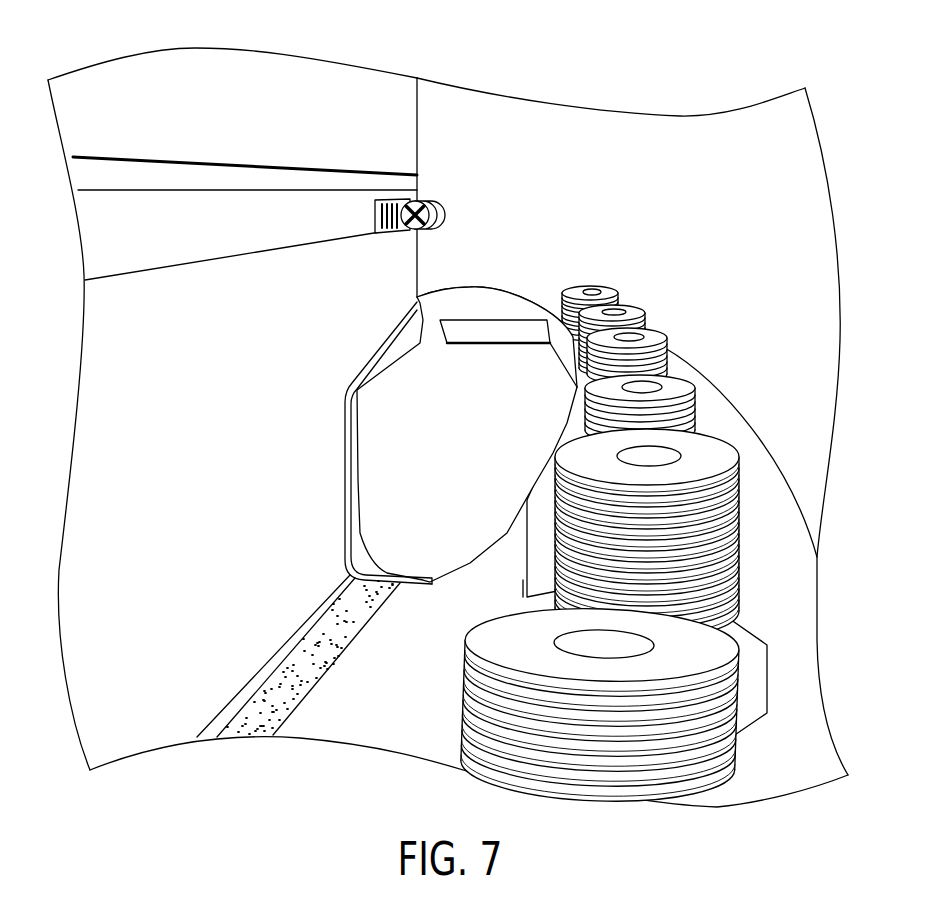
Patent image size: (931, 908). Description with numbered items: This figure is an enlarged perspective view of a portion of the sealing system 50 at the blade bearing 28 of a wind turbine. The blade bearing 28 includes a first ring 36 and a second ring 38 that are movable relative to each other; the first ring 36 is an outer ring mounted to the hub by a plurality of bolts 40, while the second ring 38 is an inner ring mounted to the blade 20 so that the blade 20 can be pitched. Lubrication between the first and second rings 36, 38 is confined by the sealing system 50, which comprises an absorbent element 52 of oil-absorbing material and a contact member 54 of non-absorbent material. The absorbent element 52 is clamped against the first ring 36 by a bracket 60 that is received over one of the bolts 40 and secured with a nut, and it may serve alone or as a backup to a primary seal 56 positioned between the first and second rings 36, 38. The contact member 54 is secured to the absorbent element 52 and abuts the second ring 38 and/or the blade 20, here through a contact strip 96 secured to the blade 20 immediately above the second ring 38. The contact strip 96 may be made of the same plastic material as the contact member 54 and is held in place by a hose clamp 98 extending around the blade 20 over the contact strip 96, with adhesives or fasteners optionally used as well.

The blade 20 is at (114, 82).
The blade bearing 28 is at (398, 722).
The first ring 36 is at (340, 727).
The second ring 38 is at (228, 720).
The bolts 40 is at (649, 337).
The sealing system 50 is at (462, 262).
The absorbent element 52 is at (472, 427).
The contact member 54 is at (346, 388).
The primary seal 56 is at (300, 678).
The bracket 60 is at (482, 332).
The contact strip 96 is at (214, 479).
The hose clamp 98 is at (441, 206).